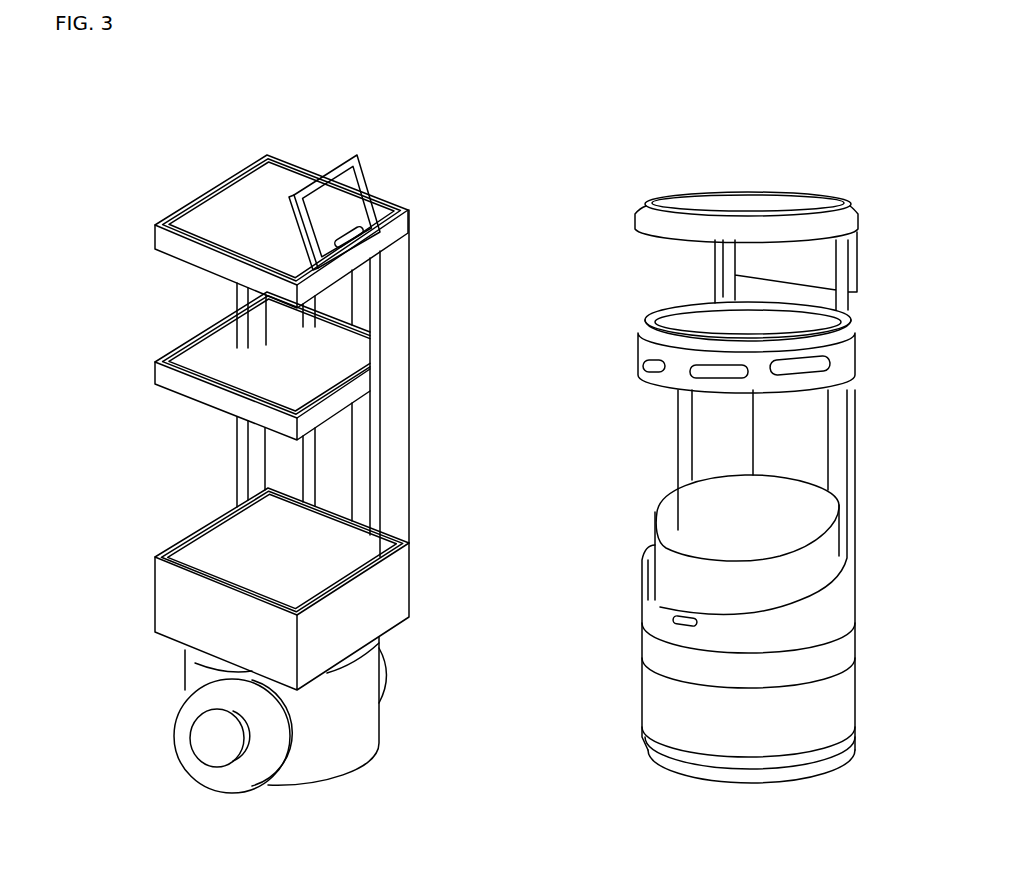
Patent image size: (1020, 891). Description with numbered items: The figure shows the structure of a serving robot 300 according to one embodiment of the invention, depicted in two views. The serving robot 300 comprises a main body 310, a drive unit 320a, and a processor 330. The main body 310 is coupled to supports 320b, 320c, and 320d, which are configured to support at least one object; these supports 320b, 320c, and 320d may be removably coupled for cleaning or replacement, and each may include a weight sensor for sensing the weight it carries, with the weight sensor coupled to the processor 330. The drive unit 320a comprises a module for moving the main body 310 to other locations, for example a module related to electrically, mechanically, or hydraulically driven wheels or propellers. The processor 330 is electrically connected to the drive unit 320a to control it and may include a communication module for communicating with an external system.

The serving robot 300 is at (152, 112).
The main body 310 is at (437, 203).
The drive unit 320a is at (215, 741).
The support 320b is at (172, 586).
The support 320c is at (165, 372).
The support 320d is at (166, 238).
The processor 330 is at (197, 662).